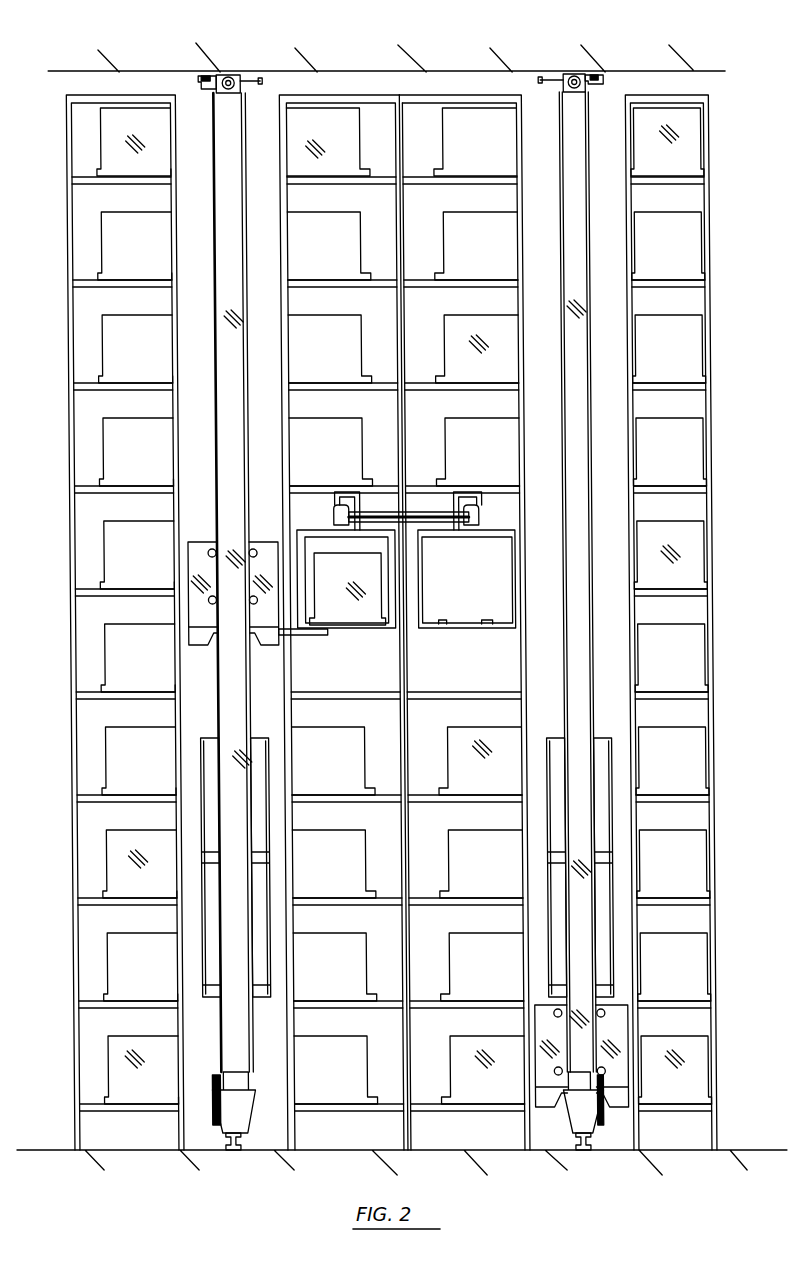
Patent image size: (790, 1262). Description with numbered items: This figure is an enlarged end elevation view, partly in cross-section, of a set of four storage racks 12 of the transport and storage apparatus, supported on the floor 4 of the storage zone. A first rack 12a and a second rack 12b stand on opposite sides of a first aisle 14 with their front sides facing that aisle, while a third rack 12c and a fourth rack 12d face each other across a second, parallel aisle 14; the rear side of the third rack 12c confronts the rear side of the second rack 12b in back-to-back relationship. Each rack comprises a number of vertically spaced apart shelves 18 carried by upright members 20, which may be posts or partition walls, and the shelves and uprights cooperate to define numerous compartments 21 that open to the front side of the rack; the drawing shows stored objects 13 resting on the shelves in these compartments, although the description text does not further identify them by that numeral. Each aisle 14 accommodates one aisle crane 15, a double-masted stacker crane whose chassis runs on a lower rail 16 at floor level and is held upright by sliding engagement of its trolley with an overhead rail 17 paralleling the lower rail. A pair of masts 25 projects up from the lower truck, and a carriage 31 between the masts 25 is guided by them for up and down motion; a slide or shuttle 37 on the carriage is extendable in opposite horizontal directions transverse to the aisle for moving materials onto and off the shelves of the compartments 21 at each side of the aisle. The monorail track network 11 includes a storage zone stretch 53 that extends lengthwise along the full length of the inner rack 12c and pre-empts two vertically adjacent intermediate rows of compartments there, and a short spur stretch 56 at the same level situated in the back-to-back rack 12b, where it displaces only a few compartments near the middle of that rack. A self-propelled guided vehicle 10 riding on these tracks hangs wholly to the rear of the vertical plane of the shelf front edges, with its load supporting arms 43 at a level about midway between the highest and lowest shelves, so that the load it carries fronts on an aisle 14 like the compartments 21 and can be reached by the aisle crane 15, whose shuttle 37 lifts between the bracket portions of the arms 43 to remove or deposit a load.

The floor 4 is at (303, 1151).
The automatic guided vehicle 10 is at (371, 630).
The track network 11 is at (413, 508).
The storage rack 12 is at (416, 94).
The first rack 12a is at (118, 96).
The second rack 12b is at (330, 94).
The third rack 12c is at (496, 94).
The fourth rack 12d is at (695, 93).
The container 13 is at (105, 243).
The aisle 14 is at (205, 256).
The aisle crane 15 is at (218, 1130).
The lower rail 16 is at (236, 1147).
The overhead rail 17 is at (206, 77).
The shelf 18 is at (95, 282).
The upright member 20 is at (168, 205).
The compartment 21 is at (495, 154).
The mast 25 is at (215, 425).
The carriage 31 is at (200, 543).
The shuttle 37 is at (305, 636).
The arm 43 is at (462, 632).
The storage zone stretch 53 is at (478, 519).
The spur stretch 56 is at (333, 521).